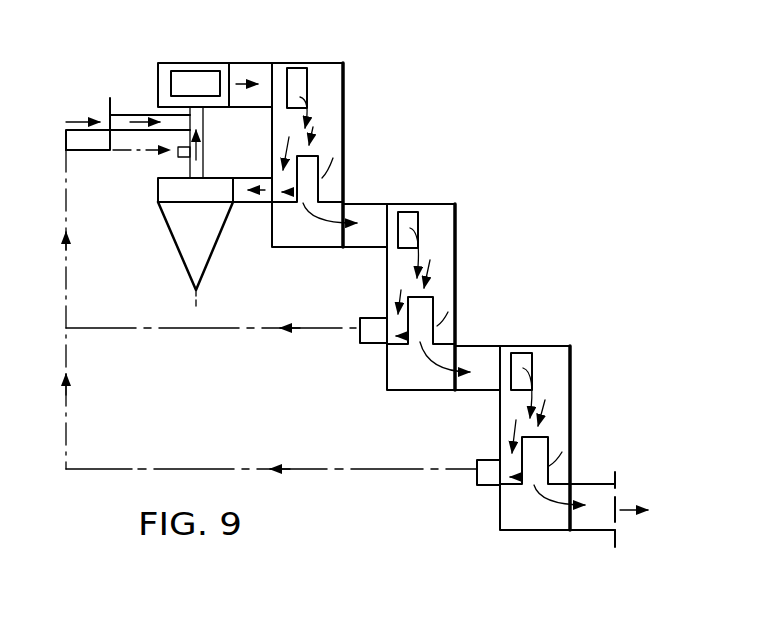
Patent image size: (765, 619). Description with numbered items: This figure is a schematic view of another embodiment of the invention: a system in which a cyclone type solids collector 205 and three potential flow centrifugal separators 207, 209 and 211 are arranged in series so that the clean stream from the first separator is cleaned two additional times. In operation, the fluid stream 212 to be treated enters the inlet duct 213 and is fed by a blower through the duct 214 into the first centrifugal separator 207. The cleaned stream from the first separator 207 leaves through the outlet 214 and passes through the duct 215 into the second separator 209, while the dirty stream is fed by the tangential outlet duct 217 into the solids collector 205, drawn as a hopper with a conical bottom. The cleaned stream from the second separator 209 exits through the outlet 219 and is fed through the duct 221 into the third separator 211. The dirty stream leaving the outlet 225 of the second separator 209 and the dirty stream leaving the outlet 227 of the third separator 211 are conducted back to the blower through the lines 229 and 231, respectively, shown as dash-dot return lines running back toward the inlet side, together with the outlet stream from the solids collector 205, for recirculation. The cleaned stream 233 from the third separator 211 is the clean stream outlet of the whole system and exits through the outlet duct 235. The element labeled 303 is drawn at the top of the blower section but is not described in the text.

The feed controller 303 is at (183, 77).
The duct / outlet 214 is at (250, 63).
The first centrifugal separator 207 is at (333, 133).
The fluid stream 212 is at (82, 120).
The inlet duct 213 is at (138, 110).
The cyclone type solids collector 205 is at (182, 232).
The tangential outlet duct 217 is at (253, 205).
The duct 215 is at (363, 240).
The second separator 209 is at (446, 262).
The outlet 219 is at (428, 308).
The outlet 225 is at (358, 333).
The line 229 is at (188, 330).
The duct 221 is at (472, 390).
The outlet 227 is at (488, 483).
The third separator 211 is at (558, 392).
The outlet duct 235 is at (603, 532).
The cleaned stream 233 is at (633, 505).
The line 231 is at (105, 470).